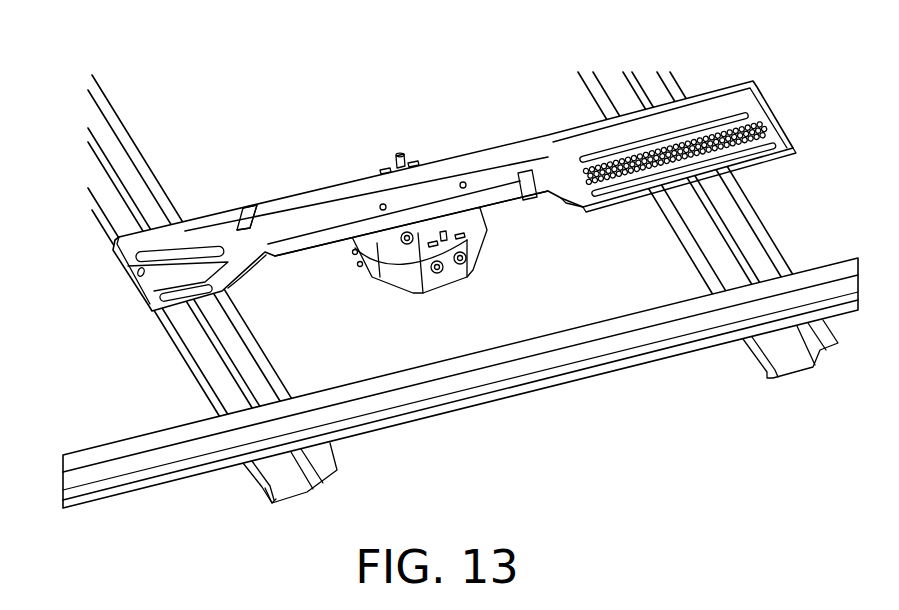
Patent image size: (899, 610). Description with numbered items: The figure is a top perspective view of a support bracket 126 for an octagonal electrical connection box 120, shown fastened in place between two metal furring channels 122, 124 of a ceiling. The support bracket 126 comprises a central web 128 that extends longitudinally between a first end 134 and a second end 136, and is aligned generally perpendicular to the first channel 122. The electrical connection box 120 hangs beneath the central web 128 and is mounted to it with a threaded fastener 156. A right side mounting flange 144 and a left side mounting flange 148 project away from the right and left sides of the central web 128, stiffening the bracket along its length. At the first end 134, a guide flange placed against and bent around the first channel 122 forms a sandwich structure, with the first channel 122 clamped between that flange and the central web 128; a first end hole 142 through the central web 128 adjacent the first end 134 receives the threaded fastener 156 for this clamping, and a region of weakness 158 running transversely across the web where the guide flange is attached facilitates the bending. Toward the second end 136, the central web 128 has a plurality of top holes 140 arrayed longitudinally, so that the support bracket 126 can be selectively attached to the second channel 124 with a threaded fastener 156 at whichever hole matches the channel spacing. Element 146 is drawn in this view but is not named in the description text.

The electrical connection box 120 is at (476, 220).
The first channel 122 is at (104, 131).
The second channel 124 is at (756, 235).
The support bracket 126 is at (432, 206).
The central web 128 is at (240, 232).
The first end 134 is at (117, 238).
The second end 136 is at (766, 103).
The top holes 140 is at (608, 174).
The first end hole 142 is at (127, 281).
The right side mounting flange 144 is at (320, 238).
The top wall 146 is at (482, 160).
The left side mounting flange 148 is at (288, 207).
The threaded fastener 156 is at (383, 203).
The region of weakness 158 is at (133, 292).